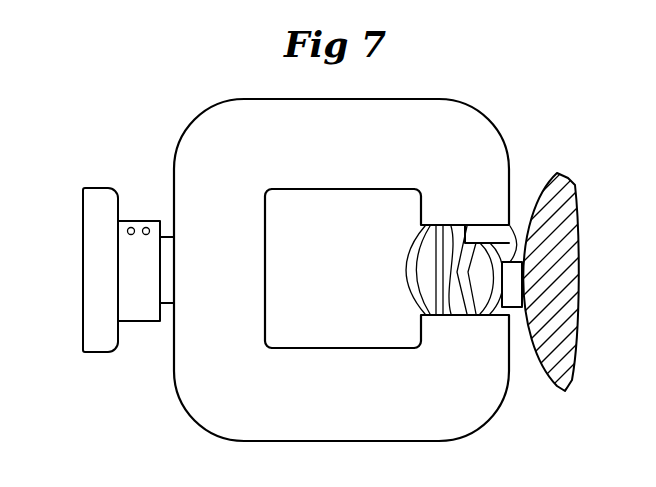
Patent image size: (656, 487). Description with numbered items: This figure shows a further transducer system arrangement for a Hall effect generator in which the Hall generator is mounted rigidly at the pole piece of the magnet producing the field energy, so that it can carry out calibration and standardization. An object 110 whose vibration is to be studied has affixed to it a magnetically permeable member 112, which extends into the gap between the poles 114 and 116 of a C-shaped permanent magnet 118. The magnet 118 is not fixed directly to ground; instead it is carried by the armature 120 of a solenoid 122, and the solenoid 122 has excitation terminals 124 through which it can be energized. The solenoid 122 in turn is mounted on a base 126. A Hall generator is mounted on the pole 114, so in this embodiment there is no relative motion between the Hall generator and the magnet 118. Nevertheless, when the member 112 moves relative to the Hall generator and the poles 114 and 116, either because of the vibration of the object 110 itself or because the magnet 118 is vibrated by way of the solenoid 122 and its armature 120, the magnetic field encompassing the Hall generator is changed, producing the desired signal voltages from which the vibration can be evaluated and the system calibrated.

The object 110 is at (573, 287).
The magnetically permeable member 112 is at (510, 290).
The pole 114 is at (421, 200).
The pole 116 is at (421, 336).
The C-shaped permanent magnet 118 is at (206, 311).
The armature 120 is at (167, 252).
The solenoid 122 is at (141, 321).
The excitation terminals 124 is at (131, 226).
The base 126 is at (93, 304).